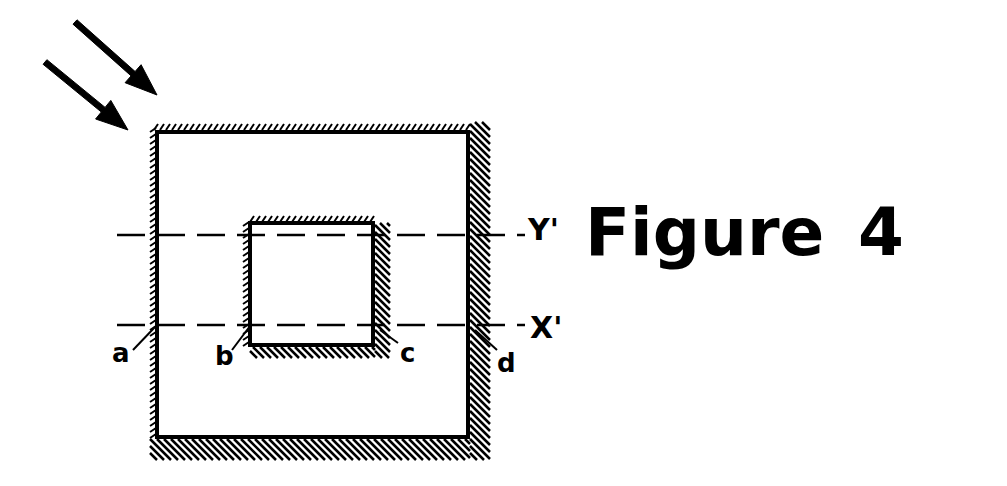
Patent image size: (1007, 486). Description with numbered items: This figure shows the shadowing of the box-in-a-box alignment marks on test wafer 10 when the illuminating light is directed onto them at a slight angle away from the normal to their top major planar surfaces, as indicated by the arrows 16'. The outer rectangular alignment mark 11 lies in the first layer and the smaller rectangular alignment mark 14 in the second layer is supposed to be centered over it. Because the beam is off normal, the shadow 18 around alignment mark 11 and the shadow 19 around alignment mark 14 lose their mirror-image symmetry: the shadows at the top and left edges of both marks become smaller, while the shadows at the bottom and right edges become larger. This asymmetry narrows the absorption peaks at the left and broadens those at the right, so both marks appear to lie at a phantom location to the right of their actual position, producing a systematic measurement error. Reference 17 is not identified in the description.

The test wafer 10 is at (368, 250).
The alignment mark 11 is at (443, 183).
The alignment mark 14 is at (333, 291).
The arrows 16' is at (98, 81).
The region between substrate wall and inner region 17 is at (218, 312).
The shadow 18 is at (413, 437).
The shadow 19 is at (290, 343).